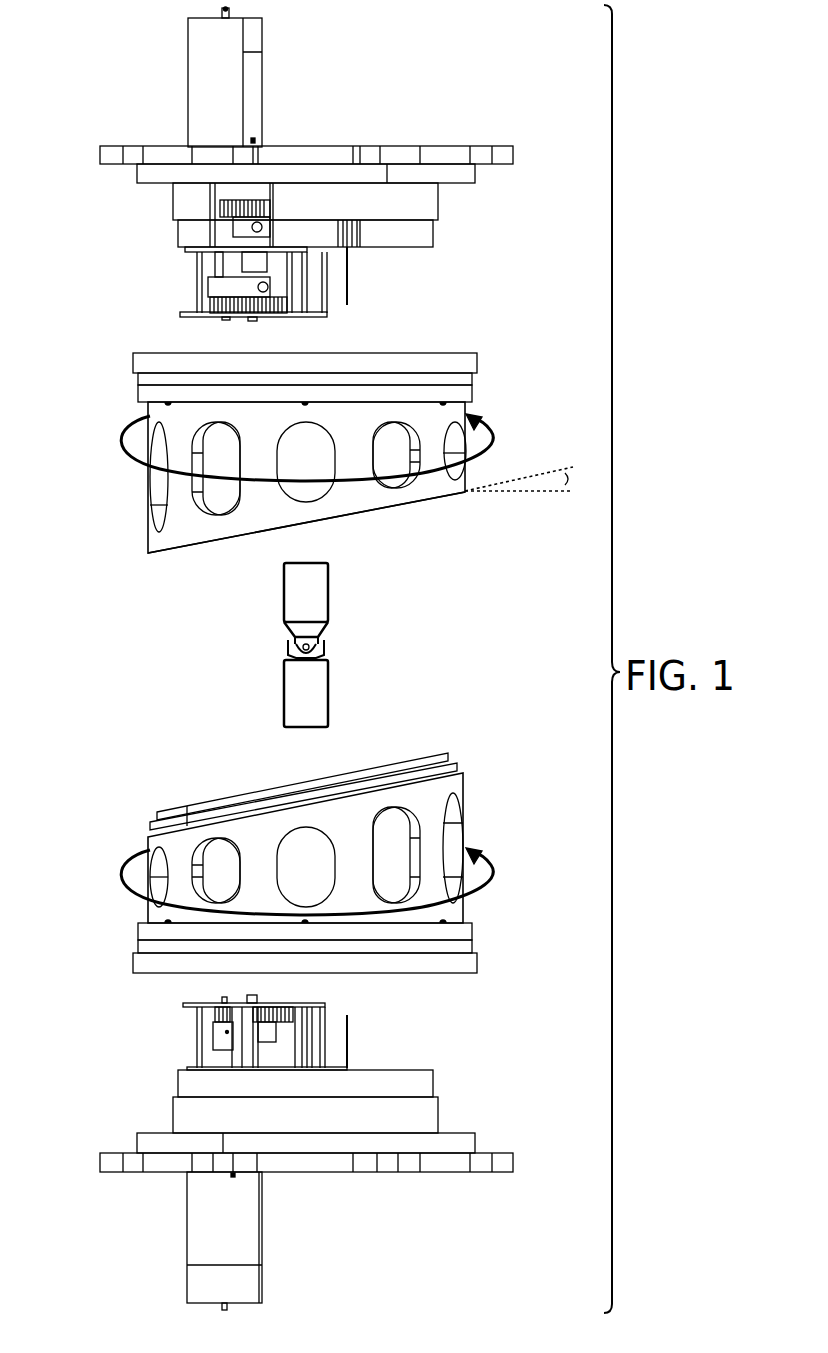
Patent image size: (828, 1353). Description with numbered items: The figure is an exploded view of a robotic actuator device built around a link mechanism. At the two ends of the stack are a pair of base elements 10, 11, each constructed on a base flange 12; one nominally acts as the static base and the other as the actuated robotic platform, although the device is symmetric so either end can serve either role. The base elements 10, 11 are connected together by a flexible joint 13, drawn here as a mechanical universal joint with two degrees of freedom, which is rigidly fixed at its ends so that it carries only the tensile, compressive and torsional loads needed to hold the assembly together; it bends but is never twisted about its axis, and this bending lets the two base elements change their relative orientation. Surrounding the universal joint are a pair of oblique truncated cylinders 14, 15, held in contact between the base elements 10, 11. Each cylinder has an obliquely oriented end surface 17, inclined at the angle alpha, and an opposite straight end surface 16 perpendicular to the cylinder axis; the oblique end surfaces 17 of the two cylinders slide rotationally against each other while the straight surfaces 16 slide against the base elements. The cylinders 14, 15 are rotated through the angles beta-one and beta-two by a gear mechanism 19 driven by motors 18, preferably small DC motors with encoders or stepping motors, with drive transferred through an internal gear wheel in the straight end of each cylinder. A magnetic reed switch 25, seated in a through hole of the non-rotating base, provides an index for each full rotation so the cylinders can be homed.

The base element 10 is at (485, 235).
The base element 11 is at (485, 1093).
The base flange 12 is at (513, 155).
The flexible joint 13 is at (330, 590).
The oblique truncated cylinder 14 is at (148, 499).
The oblique truncated cylinder 15 is at (148, 908).
The straight end surface 16 is at (478, 358).
The oblique end surface 17 is at (441, 498).
The motor 18 is at (188, 80).
The gear mechanism 19 is at (197, 268).
The magnetic reed switch 25 is at (348, 285).